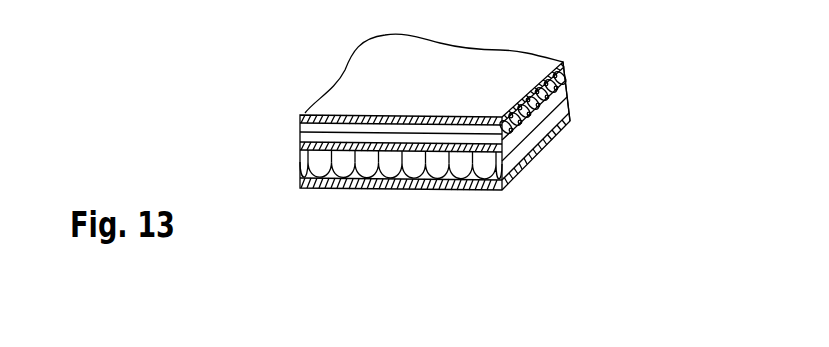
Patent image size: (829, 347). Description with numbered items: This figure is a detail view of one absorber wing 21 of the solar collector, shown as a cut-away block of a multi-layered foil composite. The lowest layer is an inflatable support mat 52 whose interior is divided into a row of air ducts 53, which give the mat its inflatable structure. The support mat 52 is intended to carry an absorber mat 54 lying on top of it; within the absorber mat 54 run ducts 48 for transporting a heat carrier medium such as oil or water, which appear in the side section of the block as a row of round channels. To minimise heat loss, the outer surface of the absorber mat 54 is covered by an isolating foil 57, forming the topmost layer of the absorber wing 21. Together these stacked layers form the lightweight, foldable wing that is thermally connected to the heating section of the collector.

The absorber wing 21 is at (448, 99).
The ducts 48 is at (532, 117).
The inflatable support mat 52 is at (359, 188).
The air ducts 53 is at (317, 161).
The absorber mat 54 is at (567, 62).
The isolating foil 57 is at (305, 113).